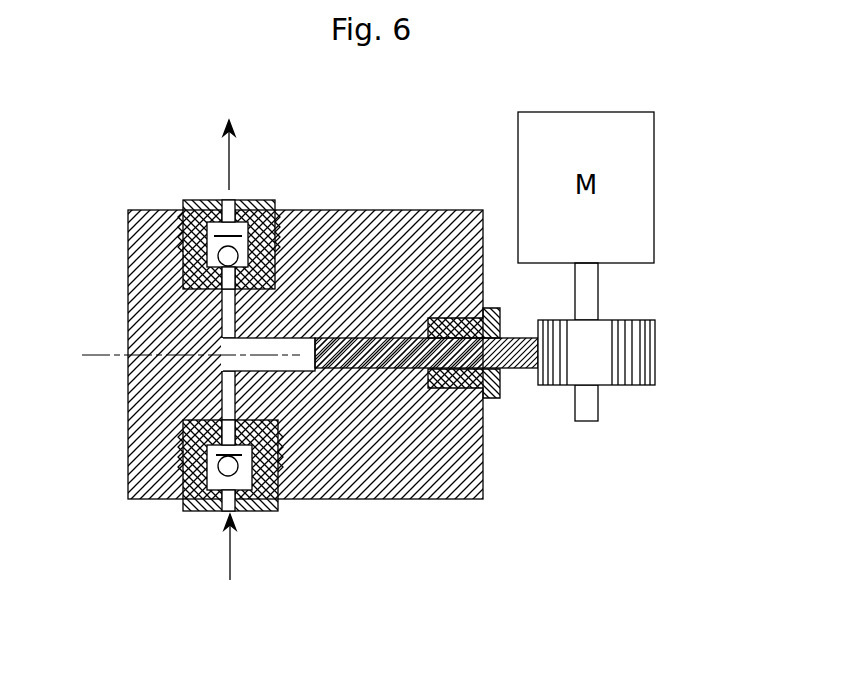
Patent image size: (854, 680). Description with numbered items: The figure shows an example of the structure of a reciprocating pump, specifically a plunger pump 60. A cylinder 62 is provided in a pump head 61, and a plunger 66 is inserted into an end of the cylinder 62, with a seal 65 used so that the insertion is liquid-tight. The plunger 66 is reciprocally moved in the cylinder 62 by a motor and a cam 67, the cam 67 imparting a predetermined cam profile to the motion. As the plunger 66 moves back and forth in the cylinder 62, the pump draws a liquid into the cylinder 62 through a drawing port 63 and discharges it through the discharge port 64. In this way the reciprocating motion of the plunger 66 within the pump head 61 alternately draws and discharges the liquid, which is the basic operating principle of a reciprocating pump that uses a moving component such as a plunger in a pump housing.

The plunger pump 60 is at (136, 143).
The pump head 61 is at (369, 218).
The cylinder 62 is at (292, 368).
The drawing port 63 is at (224, 410).
The discharge port 64 is at (224, 326).
The seal 65 is at (500, 386).
The plunger 66 is at (512, 336).
The cam 67 is at (660, 356).